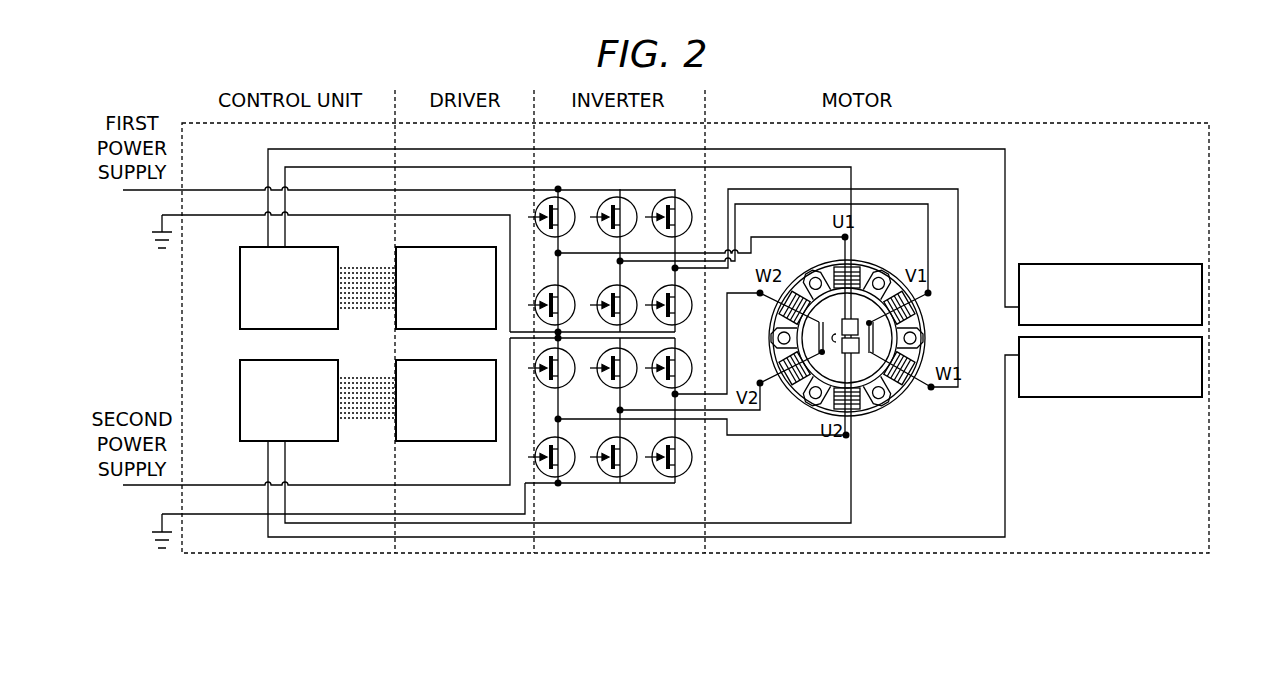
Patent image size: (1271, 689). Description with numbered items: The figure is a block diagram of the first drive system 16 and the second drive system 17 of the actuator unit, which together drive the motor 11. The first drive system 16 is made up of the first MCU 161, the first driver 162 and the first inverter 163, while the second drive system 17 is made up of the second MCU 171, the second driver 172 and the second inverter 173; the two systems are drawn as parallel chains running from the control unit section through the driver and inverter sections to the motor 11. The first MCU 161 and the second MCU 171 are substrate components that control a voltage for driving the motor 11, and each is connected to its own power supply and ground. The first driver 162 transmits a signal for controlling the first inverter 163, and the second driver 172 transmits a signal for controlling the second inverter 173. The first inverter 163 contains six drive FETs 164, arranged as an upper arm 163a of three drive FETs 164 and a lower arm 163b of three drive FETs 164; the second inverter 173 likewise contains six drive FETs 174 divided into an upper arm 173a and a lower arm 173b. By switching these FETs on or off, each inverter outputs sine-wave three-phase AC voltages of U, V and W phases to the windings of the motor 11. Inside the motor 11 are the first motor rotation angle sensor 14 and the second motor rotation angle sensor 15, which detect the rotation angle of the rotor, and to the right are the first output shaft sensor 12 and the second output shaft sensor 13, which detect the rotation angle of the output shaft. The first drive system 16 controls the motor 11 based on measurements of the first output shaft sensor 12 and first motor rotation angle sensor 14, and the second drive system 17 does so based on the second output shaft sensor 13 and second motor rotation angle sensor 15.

The motor 11 is at (845, 338).
The first output shaft sensor 12 is at (1155, 264).
The second output shaft sensor 13 is at (1150, 397).
The first motor rotation angle sensor 14 is at (840, 318).
The second motor rotation angle sensor 15 is at (866, 352).
The first drive system 16 is at (224, 253).
The second drive system 17 is at (228, 374).
The first MCU 161 is at (255, 247).
The first driver 162 is at (436, 247).
The first inverter 163 is at (574, 180).
The upper arm 163a is at (681, 189).
The lower arm 163b is at (697, 289).
The drive field effect transistors 164 is at (566, 234).
The second MCU 171 is at (255, 360).
The second driver 172 is at (436, 360).
The second inverter 173 is at (577, 492).
The upper arm 173a is at (684, 339).
The lower arm 173b is at (688, 481).
The drive field effect transistors 174 is at (566, 381).